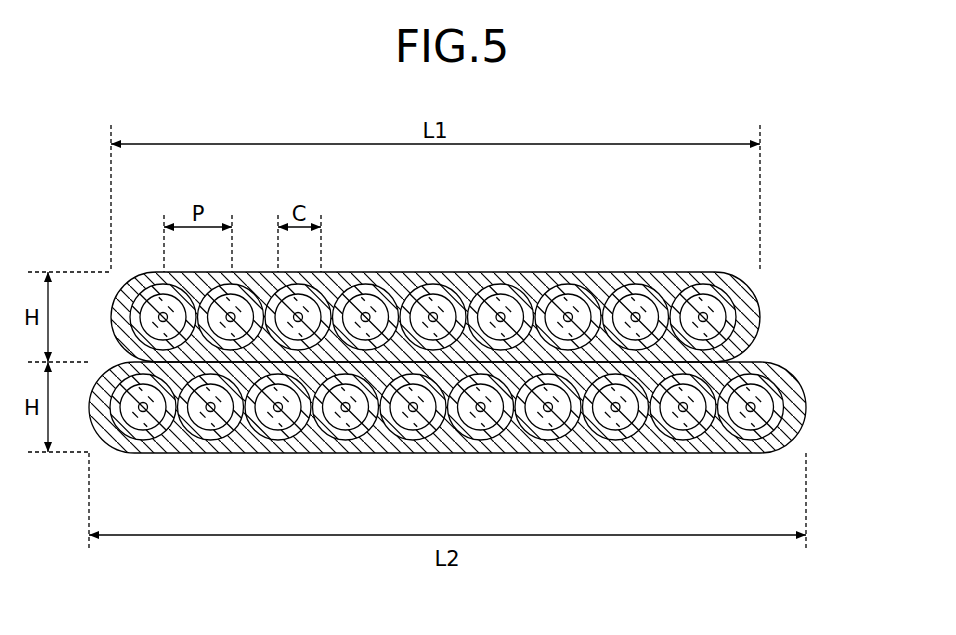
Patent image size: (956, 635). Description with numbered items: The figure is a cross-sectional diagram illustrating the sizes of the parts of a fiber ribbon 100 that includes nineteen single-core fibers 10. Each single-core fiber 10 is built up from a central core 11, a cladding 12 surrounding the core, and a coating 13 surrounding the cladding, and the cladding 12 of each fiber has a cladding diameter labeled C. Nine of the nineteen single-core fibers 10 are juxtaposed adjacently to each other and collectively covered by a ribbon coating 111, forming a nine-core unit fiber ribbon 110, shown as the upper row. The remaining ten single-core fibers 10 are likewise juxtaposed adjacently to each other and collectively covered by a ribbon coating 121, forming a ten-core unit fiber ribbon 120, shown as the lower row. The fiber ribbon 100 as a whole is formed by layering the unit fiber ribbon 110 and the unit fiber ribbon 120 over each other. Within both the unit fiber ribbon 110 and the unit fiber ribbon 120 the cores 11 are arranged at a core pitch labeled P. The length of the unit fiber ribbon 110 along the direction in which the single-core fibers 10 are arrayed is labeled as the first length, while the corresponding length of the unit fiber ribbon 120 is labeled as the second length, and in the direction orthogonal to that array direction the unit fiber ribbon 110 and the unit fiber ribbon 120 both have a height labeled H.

The single-core fiber 10 is at (484, 254).
The core 11 is at (438, 312).
The cladding 12 is at (435, 295).
The coating 13 is at (421, 291).
The fiber ribbon 100 is at (485, 328).
The nine-core unit fiber ribbon 110 is at (435, 260).
The ribbon coating 111 is at (670, 273).
The ten-core unit fiber ribbon 120 is at (485, 398).
The ribbon coating 121 is at (712, 443).